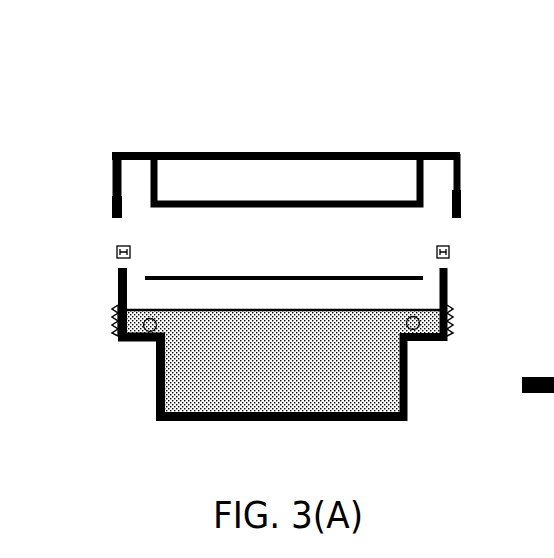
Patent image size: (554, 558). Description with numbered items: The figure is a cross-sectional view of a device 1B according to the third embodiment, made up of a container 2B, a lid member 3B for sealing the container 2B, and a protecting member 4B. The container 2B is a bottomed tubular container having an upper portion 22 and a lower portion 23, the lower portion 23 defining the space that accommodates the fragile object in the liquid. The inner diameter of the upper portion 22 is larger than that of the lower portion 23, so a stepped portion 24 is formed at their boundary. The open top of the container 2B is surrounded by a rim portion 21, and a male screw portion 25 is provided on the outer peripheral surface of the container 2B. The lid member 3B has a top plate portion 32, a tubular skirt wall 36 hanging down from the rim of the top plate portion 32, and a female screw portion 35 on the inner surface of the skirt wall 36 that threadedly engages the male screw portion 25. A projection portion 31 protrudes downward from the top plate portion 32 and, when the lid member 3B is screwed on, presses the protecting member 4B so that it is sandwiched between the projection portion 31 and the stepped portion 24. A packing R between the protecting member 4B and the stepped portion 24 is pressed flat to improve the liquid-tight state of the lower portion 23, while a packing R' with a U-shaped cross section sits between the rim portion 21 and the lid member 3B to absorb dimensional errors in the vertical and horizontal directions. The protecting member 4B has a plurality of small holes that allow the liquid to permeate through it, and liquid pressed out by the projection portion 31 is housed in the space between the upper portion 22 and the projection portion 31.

The device 1B is at (181, 48).
The container 2B is at (141, 389).
The lid member 3B is at (283, 136).
The protecting member 4B is at (261, 255).
The rim portion 21 is at (450, 268).
The upper portion 22 is at (448, 290).
The lower portion 23 is at (408, 393).
The stepped portion 24 is at (418, 330).
The male screw portion 25 is at (452, 318).
The projection portion 31 is at (150, 172).
The top plate portion 32 is at (388, 152).
The female screw portion 35 is at (462, 198).
The skirt wall 36 is at (460, 172).
The packing R is at (93, 331).
The packing R' is at (247, 254).